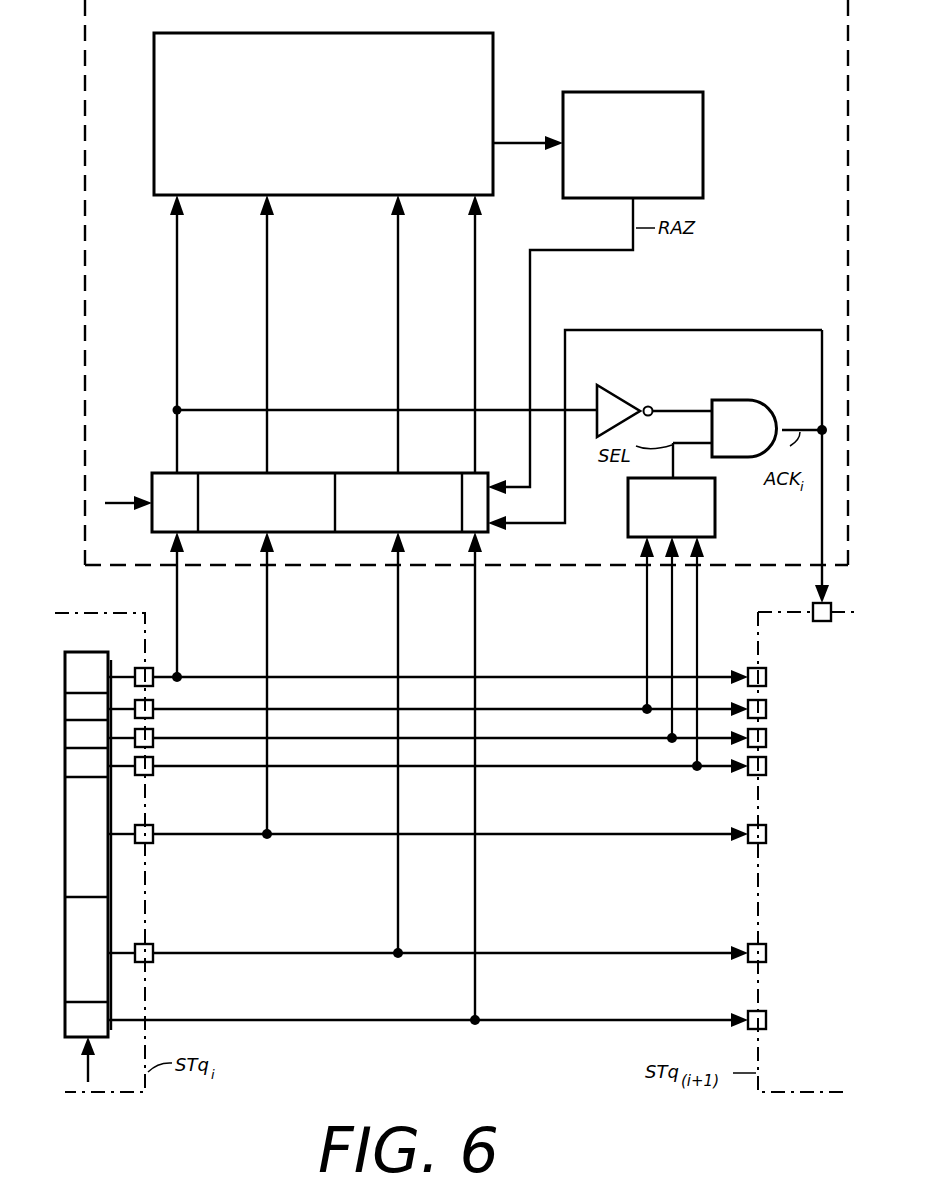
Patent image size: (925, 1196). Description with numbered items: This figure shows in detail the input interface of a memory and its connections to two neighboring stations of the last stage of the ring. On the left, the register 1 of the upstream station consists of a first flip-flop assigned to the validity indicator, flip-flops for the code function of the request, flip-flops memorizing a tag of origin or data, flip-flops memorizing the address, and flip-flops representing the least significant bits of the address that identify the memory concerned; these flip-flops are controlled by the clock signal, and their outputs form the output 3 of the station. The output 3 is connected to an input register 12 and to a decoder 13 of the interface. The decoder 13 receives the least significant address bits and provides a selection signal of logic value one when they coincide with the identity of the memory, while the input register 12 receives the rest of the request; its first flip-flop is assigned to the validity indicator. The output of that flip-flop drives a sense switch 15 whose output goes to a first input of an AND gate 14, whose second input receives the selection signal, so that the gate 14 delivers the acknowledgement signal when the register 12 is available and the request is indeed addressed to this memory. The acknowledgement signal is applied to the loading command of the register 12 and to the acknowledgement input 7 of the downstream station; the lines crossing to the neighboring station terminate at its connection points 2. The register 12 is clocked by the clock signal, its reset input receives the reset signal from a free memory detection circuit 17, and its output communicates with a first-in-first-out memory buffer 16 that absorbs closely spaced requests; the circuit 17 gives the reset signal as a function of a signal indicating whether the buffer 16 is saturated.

The register 1 is at (65, 855).
The output connection points 2 is at (766, 683).
The output 3 is at (152, 686).
The acknowledgement input 7 is at (822, 622).
The input register 12 is at (310, 473).
The decoder 13 is at (715, 520).
The AND gate 14 is at (733, 403).
The sense switch 15 is at (606, 393).
The memory buffer 16 is at (408, 33).
The free memory detection circuit 17 is at (648, 92).